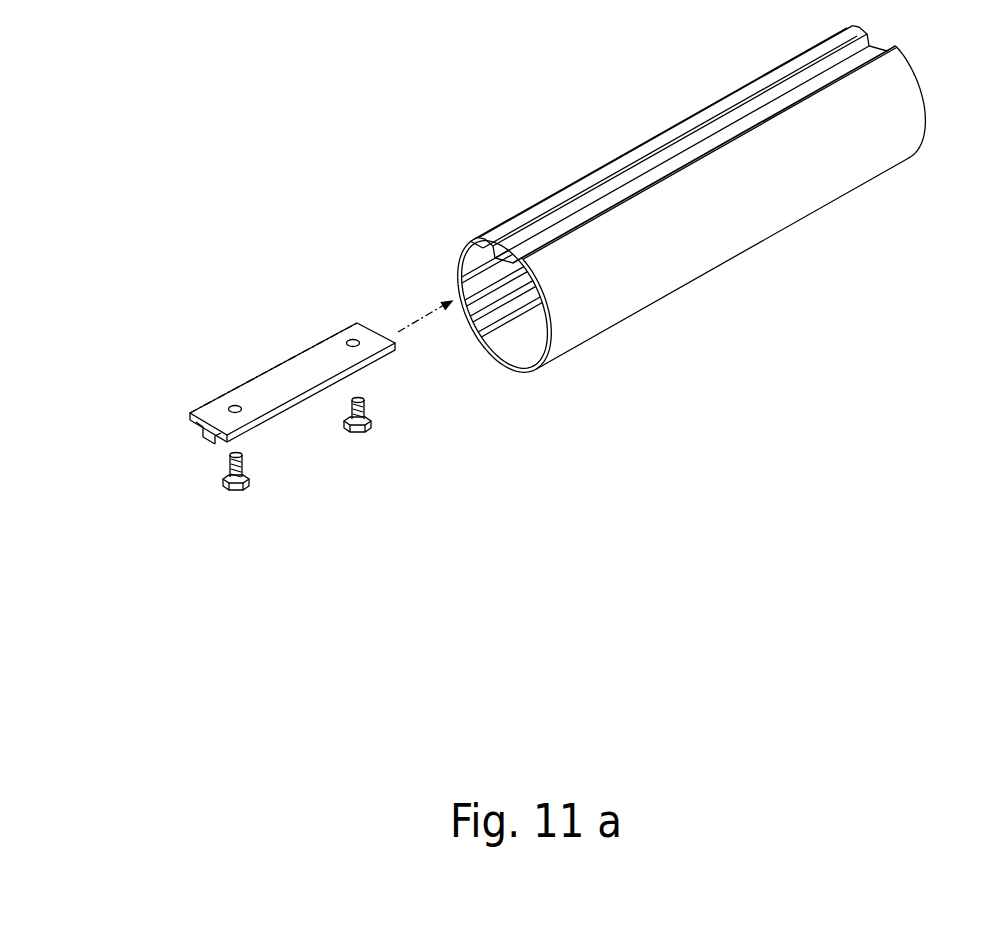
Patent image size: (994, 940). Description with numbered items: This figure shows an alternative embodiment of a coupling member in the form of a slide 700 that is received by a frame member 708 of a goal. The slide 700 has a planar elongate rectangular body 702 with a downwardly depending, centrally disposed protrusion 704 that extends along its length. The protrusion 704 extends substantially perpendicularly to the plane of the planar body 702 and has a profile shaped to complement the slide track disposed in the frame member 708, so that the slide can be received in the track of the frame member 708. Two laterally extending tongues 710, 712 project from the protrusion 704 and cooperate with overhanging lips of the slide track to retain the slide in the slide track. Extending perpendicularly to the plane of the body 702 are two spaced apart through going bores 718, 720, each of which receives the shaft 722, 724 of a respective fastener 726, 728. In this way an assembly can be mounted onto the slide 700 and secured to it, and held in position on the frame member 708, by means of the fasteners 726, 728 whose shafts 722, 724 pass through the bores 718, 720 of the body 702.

The slide 700 is at (250, 342).
The planar elongate rectangular body 702 is at (300, 365).
The protrusion 704 is at (205, 435).
The frame member 708 is at (782, 213).
The tongue 710 is at (202, 432).
The tongue 712 is at (217, 442).
The through going bore 718 is at (235, 405).
The through going bore 720 is at (353, 343).
The shaft 722 is at (289, 513).
The shaft 724 is at (411, 446).
The fastener 726 is at (240, 486).
The fastener 728 is at (365, 427).